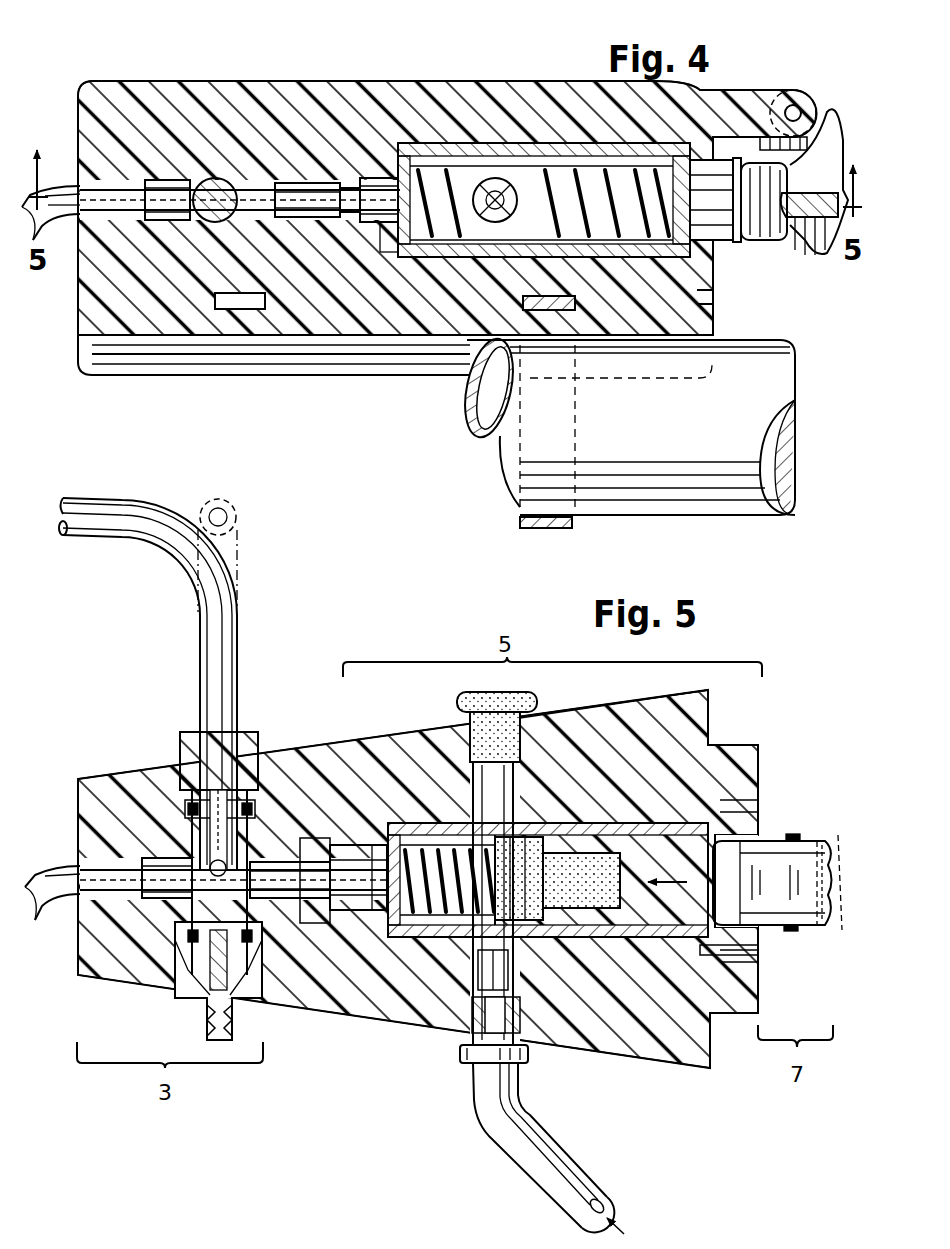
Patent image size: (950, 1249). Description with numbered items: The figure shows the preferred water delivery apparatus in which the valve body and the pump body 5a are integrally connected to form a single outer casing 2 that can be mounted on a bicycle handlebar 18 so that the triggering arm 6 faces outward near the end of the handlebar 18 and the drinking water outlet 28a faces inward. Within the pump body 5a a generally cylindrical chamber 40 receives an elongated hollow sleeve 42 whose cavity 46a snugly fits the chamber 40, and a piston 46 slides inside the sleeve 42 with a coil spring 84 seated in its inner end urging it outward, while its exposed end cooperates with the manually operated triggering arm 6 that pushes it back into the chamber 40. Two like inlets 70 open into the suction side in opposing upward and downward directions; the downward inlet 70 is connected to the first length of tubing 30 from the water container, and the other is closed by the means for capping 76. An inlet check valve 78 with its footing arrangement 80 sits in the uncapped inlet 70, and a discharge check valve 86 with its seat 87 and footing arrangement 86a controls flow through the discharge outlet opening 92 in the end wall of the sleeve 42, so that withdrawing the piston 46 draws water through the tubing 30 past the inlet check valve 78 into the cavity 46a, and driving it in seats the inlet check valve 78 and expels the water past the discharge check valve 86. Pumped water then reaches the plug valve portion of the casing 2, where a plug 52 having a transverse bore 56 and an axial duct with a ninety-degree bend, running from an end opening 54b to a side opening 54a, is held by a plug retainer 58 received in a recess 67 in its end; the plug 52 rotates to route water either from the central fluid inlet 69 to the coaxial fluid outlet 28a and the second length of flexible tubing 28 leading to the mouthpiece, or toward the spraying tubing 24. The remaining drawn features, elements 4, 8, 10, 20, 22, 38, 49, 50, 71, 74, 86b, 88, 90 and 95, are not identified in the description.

In FIG. 4, the outer casing 2 is at (120, 78).
In FIG. 5, the outer casing 2 is at (378, 738).
In FIG. 4, the mounting ear 4 is at (785, 105).
In FIG. 5, the mounting ear 4 is at (790, 926).
In FIG. 5, the pump body 5a is at (668, 688).
In FIG. 5, the manually operated triggering arm 6 is at (812, 841).
In FIG. 4, the hose clip 8 is at (818, 195).
In FIG. 5, the hose clip 8 is at (820, 900).
In FIG. 4, the mounting hole 10 is at (800, 108).
In FIG. 4, the handlebar 18 is at (738, 515).
In FIG. 4, the tube flange 20 is at (525, 305).
In FIG. 4, the mounting slot 22 is at (235, 309).
In FIG. 5, the tubing 24 is at (140, 543).
In FIG. 4, the second length of flexible tubing 28 is at (52, 185).
In FIG. 5, the second length of flexible tubing 28 is at (70, 900).
In FIG. 5, the drinking water outlet 28a is at (82, 855).
In FIG. 5, the first length of tubing 30 is at (550, 1145).
In FIG. 5, the flange 38 is at (738, 743).
In FIG. 5, the chamber 40 is at (742, 988).
In FIG. 4, the elongated hollow sleeve 42 is at (389, 252).
In FIG. 5, the elongated hollow sleeve 42 is at (650, 940).
In FIG. 4, the piston 46 is at (735, 245).
In FIG. 5, the cavity 46a is at (710, 1025).
In FIG. 4, the retaining lip 49 is at (746, 242).
In FIG. 5, the retaining lip 49 is at (745, 955).
In FIG. 4, the retaining clip 50 is at (790, 245).
In FIG. 5, the retaining clip 50 is at (770, 834).
In FIG. 4, the plug 52 is at (228, 190).
In FIG. 5, the opening 54a is at (185, 808).
In FIG. 5, the opening 54b is at (180, 770).
In FIG. 4, the bore 56 is at (212, 182).
In FIG. 5, the plug retainer 58 is at (195, 998).
In FIG. 5, the recess 67 is at (185, 900).
In FIG. 5, the fluid inlet 69 is at (232, 880).
In FIG. 5, the inlets 70 is at (490, 760).
In FIG. 5, the plunger stem 71 is at (485, 830).
In FIG. 5, the nut 74 is at (473, 1067).
In FIG. 5, the means for capping 76 is at (525, 705).
In FIG. 5, the inlet check valve 78 is at (478, 1033).
In FIG. 4, the footing arrangement 80 is at (500, 180).
In FIG. 5, the footing arrangement 80 is at (505, 925).
In FIG. 4, the coil spring 84 is at (470, 160).
In FIG. 5, the coil spring 84 is at (432, 937).
In FIG. 5, the discharge check valve 86 is at (392, 870).
In FIG. 5, the footing arrangement 86a is at (312, 838).
In FIG. 4, the housing end stub 86b is at (348, 198).
In FIG. 5, the seat 87 is at (435, 915).
In FIG. 4, the rod sleeve 88 is at (305, 188).
In FIG. 5, the rod sleeve 88 is at (292, 898).
In FIG. 4, the actuating rod 90 is at (290, 215).
In FIG. 4, the discharge outlet opening 92 is at (418, 178).
In FIG. 5, the discharge outlet opening 92 is at (360, 880).
In FIG. 4, the passage 95 is at (713, 297).